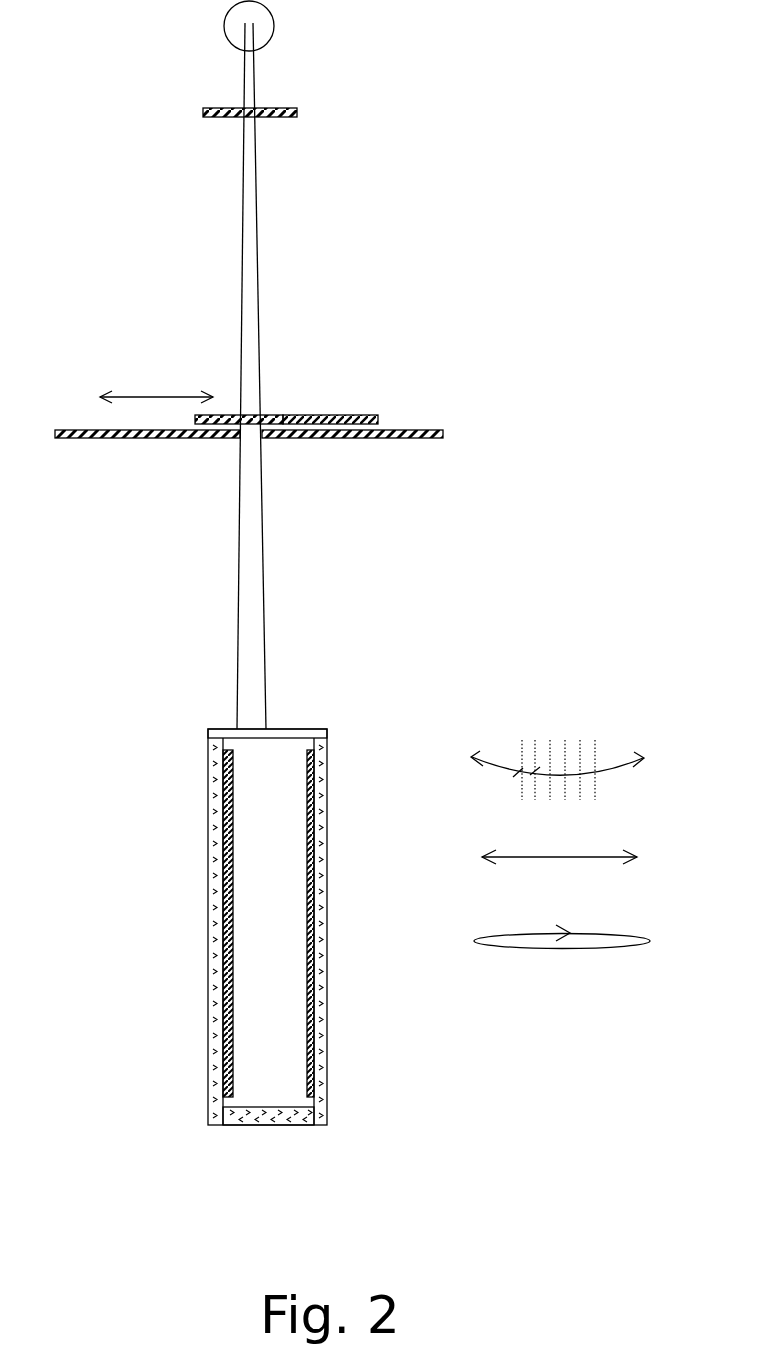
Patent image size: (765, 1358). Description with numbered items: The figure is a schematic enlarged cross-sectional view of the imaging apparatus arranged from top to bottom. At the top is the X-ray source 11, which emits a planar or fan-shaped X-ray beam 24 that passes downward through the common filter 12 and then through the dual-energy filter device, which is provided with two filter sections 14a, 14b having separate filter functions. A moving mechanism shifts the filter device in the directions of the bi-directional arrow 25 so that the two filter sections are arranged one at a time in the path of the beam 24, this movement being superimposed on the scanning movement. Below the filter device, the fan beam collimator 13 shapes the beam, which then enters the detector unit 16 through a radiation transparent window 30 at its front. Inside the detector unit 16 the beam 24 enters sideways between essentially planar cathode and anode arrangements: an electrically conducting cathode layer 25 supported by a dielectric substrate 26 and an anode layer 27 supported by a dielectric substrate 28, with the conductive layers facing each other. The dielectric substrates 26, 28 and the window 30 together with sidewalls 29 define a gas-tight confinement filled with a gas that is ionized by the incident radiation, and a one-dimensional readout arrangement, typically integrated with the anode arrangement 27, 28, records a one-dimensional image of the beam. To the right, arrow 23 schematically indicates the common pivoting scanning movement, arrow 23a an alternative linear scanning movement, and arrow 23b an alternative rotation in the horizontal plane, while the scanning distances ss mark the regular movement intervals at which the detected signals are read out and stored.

The X-ray source 11 is at (210, 37).
The common filter 12 is at (273, 108).
The fan-shaped X-ray beam 24 is at (257, 200).
The cathode layer 25 is at (188, 397).
The first filter section 14a is at (277, 415).
The second filter section 14b is at (375, 415).
The fan beam collimator 13 is at (337, 438).
The detector unit 16 is at (241, 950).
The radiation transparent window 30 is at (317, 729).
The cathode dielectric substrate 26 is at (208, 875).
The anode dielectric substrate 28 is at (327, 875).
The anode layer 27 is at (307, 1083).
The sidewalls 29 is at (272, 1127).
The pivoting movement arrow 23 is at (573, 727).
The linear scanning movement arrow 23a is at (588, 857).
The rotational scanning movement arrow 23b is at (587, 933).
The scanning distances ss is at (532, 765).